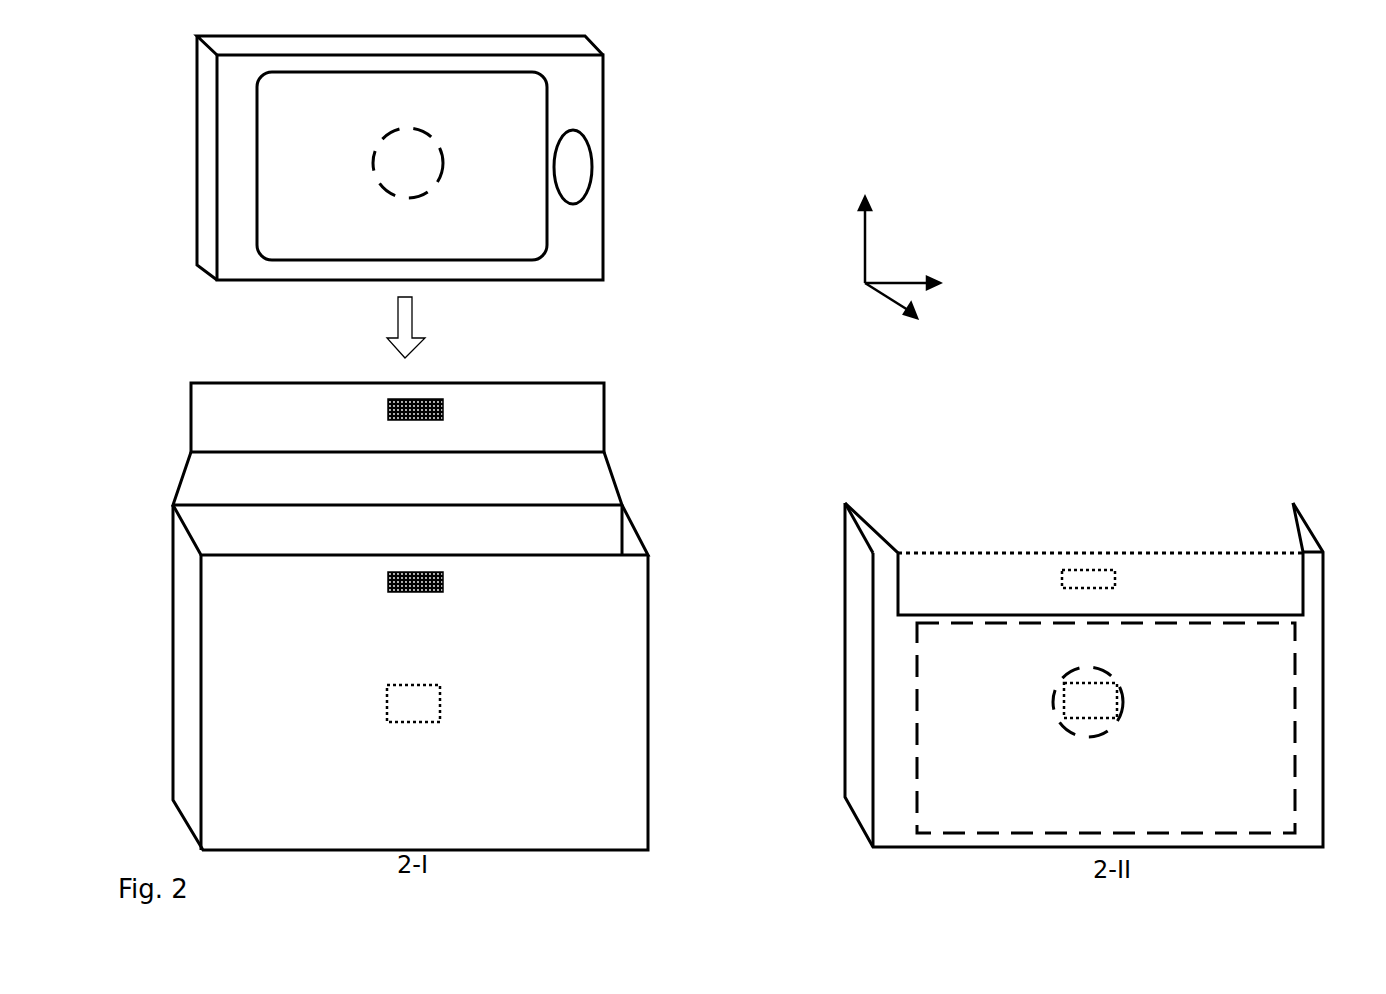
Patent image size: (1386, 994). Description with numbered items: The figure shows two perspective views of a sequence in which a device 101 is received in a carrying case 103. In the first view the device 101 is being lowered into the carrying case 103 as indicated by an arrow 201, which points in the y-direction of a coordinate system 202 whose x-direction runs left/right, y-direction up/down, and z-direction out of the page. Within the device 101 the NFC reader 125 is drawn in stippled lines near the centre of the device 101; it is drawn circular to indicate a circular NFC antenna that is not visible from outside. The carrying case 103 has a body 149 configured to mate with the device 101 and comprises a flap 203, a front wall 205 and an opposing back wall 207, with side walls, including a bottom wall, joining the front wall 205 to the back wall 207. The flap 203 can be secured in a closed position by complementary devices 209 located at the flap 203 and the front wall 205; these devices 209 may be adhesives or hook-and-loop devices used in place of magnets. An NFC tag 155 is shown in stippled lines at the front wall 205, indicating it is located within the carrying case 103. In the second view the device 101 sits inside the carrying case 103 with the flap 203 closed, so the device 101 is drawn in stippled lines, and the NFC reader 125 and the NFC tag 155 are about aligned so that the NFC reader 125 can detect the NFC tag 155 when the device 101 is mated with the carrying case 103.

The device 101 is at (591, 109).
The carrying case 103 is at (842, 701).
The NFC reader 125 is at (445, 163).
The body 149 is at (269, 826).
The NFC tag 155 is at (1075, 685).
The arrow 201 is at (421, 341).
The coordinate system 202 is at (836, 262).
The flap 203 is at (586, 429).
The front wall 205 is at (882, 575).
The back wall 207 is at (872, 538).
The complementary devices 209 is at (1063, 571).